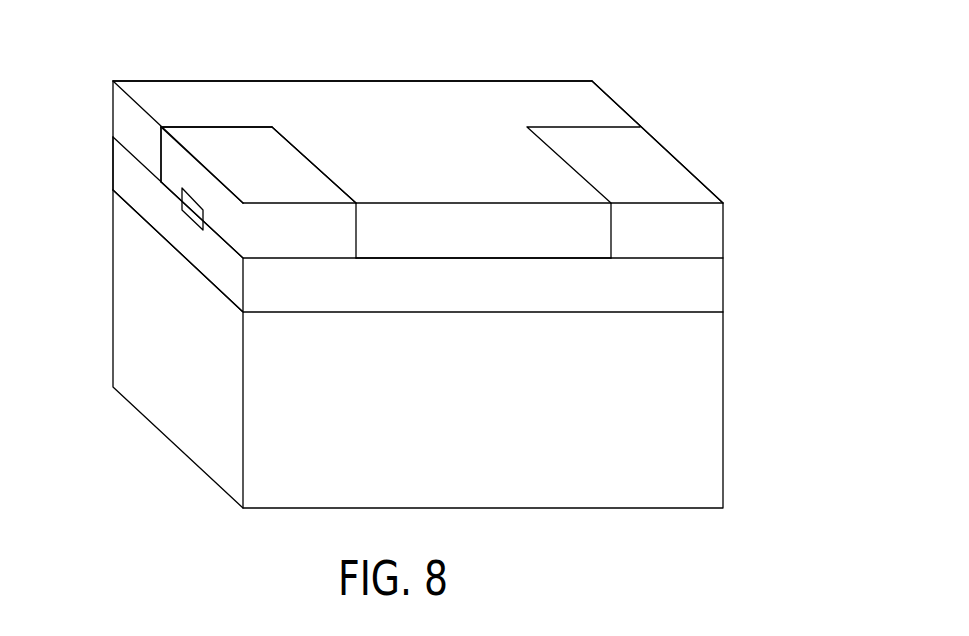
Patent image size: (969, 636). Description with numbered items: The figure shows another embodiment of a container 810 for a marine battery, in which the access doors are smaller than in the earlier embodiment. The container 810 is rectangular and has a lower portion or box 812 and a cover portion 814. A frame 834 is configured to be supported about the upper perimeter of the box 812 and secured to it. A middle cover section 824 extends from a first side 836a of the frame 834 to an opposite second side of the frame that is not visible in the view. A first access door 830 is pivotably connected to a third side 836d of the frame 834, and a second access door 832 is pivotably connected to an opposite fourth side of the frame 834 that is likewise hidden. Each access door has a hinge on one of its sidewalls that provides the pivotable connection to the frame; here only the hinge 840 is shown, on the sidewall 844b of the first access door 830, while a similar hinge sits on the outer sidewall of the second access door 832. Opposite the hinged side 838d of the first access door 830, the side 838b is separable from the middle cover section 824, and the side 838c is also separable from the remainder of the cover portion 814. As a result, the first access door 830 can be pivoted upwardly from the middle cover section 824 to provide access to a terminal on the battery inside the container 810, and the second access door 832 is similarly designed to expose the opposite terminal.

The container 810 is at (647, 55).
The lower portion (box) 812 is at (692, 413).
The cover portion 814 is at (315, 88).
The middle cover section 824 is at (412, 160).
The first access door 830 is at (208, 128).
The second access door 832 is at (646, 162).
The frame 834 is at (693, 279).
The first side of the frame 836a is at (503, 298).
The third side of the frame 836d is at (152, 210).
The side of access door 838b is at (315, 158).
The side of access door 838c is at (242, 120).
The hinged side of access door 838d is at (183, 173).
The hinge 840 is at (193, 222).
The sidewall of access door 844b is at (169, 148).